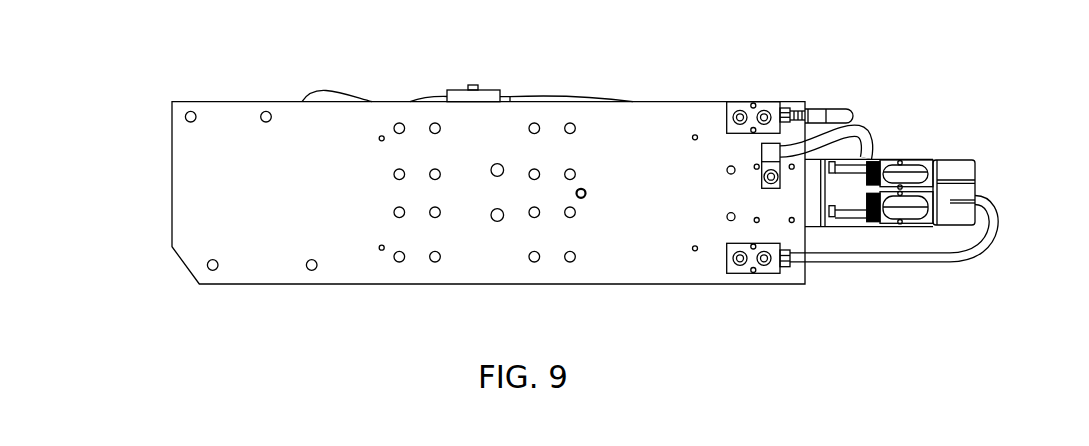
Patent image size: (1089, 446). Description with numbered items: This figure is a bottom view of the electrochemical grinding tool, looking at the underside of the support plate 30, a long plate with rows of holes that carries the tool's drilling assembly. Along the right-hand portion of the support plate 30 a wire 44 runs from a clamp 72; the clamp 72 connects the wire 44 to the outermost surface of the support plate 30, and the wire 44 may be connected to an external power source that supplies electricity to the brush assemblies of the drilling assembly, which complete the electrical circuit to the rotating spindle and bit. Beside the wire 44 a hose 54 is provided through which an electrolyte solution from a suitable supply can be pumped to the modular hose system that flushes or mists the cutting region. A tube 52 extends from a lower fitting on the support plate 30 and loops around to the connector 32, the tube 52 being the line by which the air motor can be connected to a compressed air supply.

The support plate 30 is at (236, 119).
The connector assembly 32 is at (960, 170).
The wire 44 is at (857, 135).
The tube 52 is at (940, 252).
The hose 54 is at (837, 113).
The clamp 72 is at (770, 150).